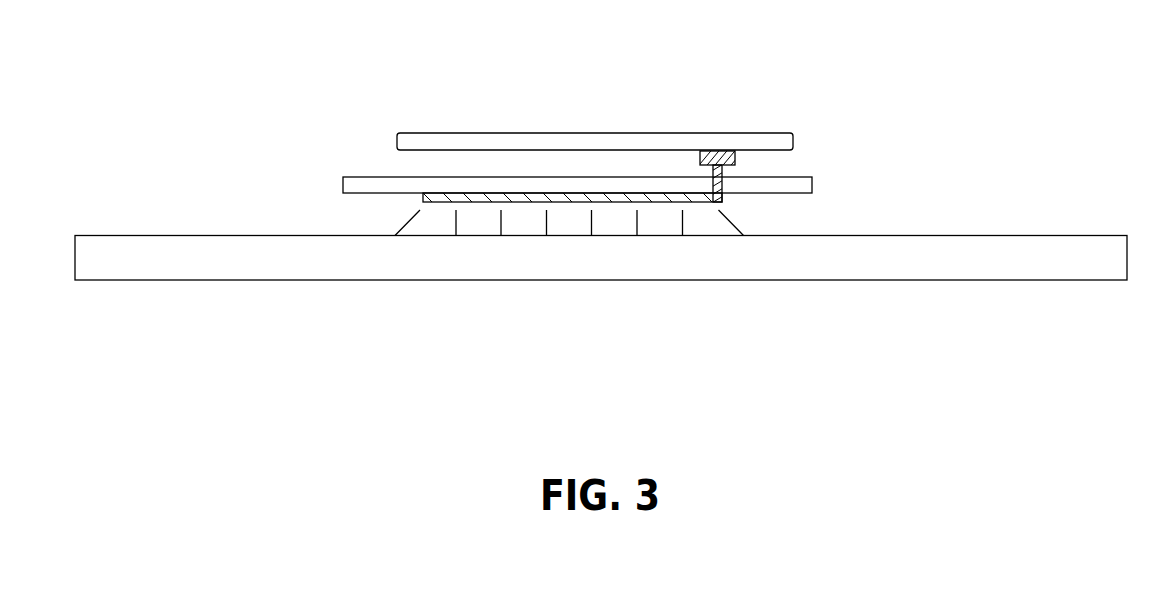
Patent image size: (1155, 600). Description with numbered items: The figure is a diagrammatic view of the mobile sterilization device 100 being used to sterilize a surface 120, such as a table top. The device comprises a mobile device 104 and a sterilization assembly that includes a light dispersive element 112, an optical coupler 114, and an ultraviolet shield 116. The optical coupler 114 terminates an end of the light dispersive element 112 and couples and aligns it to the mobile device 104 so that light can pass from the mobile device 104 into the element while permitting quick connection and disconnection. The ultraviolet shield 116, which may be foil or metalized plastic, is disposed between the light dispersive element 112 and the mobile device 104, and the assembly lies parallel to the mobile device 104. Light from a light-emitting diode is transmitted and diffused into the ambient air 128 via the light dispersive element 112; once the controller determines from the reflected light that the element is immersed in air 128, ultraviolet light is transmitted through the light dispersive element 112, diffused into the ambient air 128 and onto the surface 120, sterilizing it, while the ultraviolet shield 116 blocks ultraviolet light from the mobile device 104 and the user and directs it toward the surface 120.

The mobile sterilization device 100 is at (838, 68).
The mobile device 104 is at (595, 142).
The light dispersive element 112 is at (532, 197).
The optical coupler 114 is at (712, 151).
The ultraviolet shield 116 is at (367, 187).
The surface 120 is at (995, 247).
The ambient air 128 is at (618, 222).